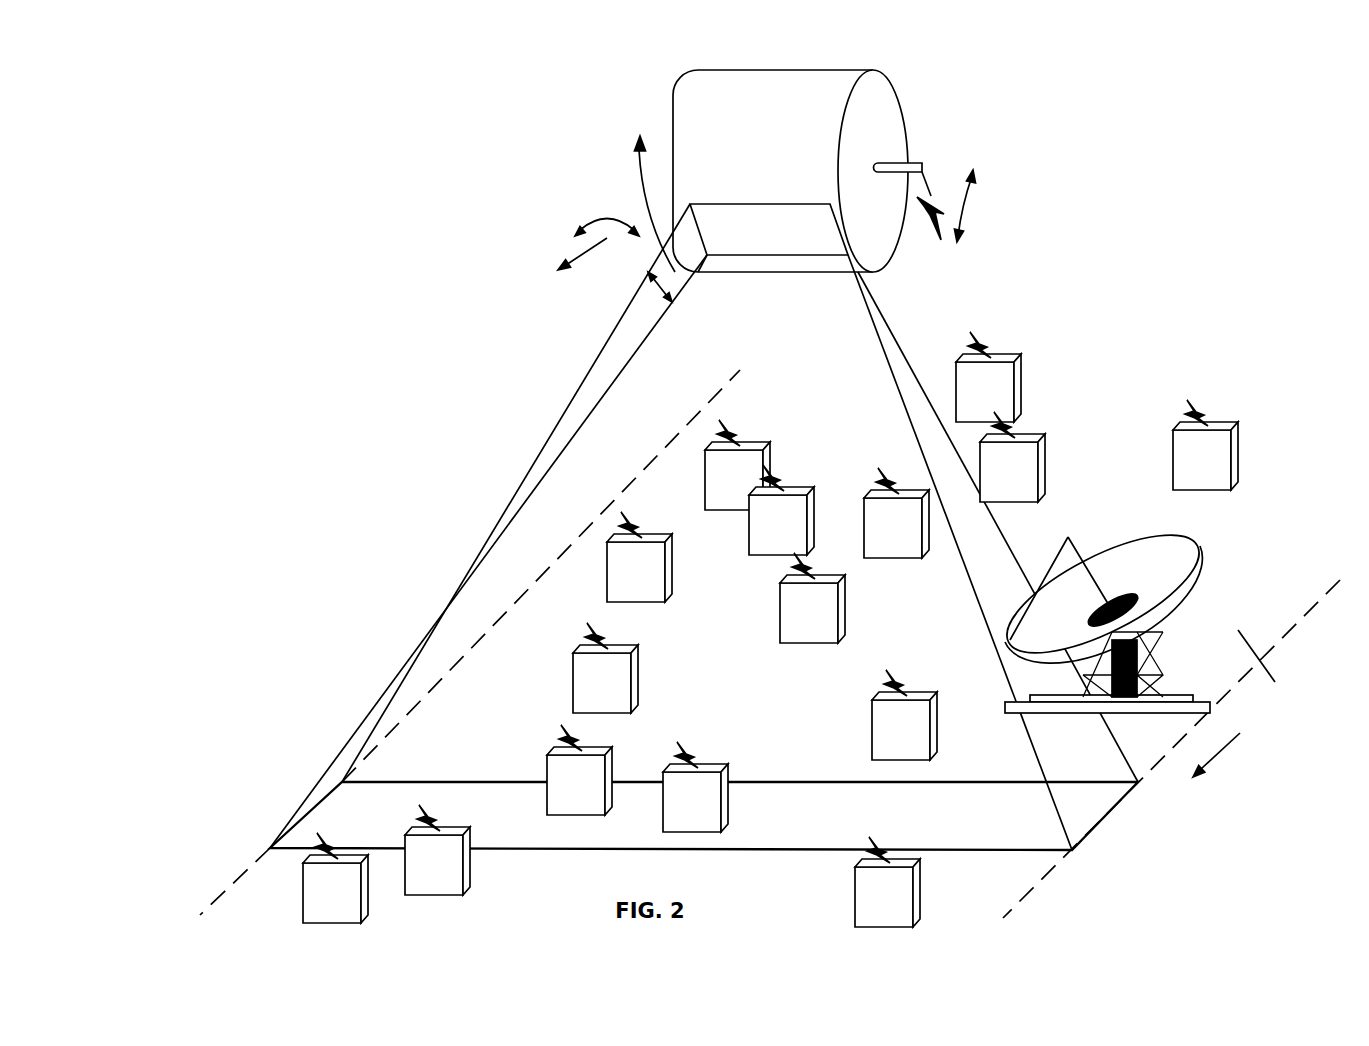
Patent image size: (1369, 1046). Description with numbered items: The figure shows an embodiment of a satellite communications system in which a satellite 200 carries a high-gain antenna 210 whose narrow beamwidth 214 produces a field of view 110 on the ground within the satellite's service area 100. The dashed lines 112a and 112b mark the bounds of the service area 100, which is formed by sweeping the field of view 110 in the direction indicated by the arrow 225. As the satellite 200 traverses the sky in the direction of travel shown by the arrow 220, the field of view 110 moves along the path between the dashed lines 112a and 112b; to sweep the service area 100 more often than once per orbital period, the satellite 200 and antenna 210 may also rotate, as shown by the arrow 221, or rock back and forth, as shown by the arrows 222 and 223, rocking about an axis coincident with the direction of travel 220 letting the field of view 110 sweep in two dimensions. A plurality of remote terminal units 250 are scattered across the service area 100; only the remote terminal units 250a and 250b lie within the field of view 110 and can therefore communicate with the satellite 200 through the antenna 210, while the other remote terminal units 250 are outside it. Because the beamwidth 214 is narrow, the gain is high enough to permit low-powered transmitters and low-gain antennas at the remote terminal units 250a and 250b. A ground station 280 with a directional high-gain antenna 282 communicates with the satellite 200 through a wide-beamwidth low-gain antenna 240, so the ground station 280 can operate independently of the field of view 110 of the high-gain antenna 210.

The service area 100 is at (1275, 662).
The field of view 110 is at (1072, 818).
The dashed line 112a is at (1040, 882).
The dashed line 112b is at (238, 875).
The satellite 200 is at (880, 120).
The high-gain antenna 210 is at (813, 247).
The beamwidth 214 is at (655, 288).
The arrow indicating direction of travel 220 is at (577, 251).
The arrow indicating rotation 221 is at (642, 205).
The arrow indicating rocking motion 222 is at (977, 193).
The arrow indicating rocking motion 223 is at (603, 220).
The arrow indicating sweep direction 225 is at (1213, 753).
The wide-beamwidth low-gain antenna 240 is at (921, 163).
The remote terminal unit 250 is at (770, 629).
The remote terminal unit 250a is at (597, 762).
The remote terminal unit 250b is at (712, 783).
The ground station 280 is at (1182, 697).
The directional high-gain antenna 282 is at (1185, 553).